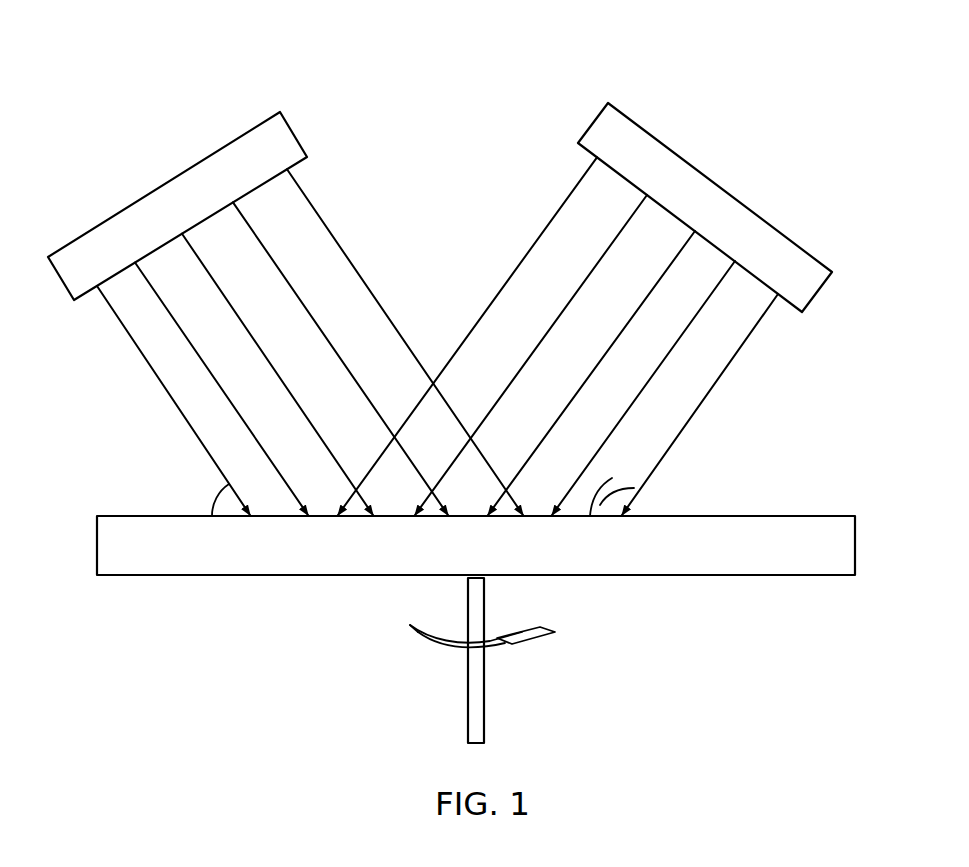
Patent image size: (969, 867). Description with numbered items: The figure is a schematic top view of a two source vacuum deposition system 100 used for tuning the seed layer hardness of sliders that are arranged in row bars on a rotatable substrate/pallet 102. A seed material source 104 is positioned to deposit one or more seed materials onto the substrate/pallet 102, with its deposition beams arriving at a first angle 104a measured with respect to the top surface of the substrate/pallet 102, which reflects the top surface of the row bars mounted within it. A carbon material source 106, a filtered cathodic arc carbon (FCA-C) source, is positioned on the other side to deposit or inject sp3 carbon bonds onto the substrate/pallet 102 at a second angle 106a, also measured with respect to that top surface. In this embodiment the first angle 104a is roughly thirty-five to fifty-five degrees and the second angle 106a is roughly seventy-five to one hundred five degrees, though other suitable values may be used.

The two source vacuum deposition system 100 is at (455, 58).
The substrate/pallet 102 is at (793, 515).
The seed material source 104 is at (165, 185).
The first angle 104a is at (212, 493).
The carbon material source (FCA-C) 106 is at (758, 213).
The second angle 106a is at (612, 478).